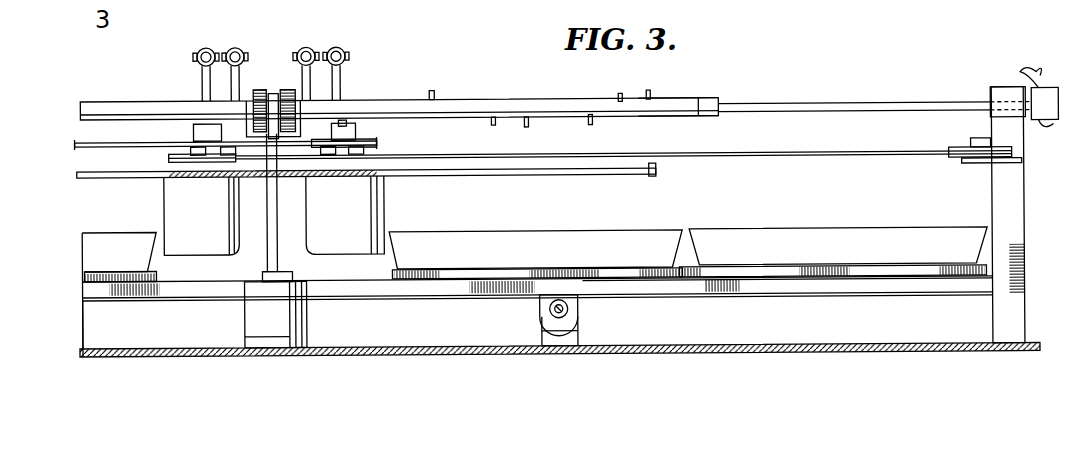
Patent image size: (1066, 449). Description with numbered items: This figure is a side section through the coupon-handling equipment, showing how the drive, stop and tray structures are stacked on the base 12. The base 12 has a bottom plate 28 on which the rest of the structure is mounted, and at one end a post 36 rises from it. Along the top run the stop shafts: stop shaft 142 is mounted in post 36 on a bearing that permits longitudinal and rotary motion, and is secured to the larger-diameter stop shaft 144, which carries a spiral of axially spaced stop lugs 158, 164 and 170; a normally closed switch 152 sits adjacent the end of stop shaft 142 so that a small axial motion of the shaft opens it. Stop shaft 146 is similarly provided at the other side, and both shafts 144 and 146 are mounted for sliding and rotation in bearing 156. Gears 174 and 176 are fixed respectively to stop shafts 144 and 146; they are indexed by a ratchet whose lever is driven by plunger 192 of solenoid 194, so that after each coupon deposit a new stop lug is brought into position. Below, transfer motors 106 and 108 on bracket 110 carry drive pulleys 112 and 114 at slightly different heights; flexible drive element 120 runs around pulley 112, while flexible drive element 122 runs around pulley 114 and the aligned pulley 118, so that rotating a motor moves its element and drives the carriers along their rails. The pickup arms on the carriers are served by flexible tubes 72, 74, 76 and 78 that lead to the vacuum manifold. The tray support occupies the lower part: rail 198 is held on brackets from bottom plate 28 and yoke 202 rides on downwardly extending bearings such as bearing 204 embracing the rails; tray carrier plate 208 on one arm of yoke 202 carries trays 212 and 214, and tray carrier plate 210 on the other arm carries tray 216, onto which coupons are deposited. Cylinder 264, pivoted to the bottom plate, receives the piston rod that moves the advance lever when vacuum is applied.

The cylinder 264 is at (181, 14).
The base 12 is at (92, 357).
The bottom plate 28 is at (470, 357).
The post 36 is at (1005, 201).
The flexible tube 72 is at (345, 50).
The flexible tube 74 is at (310, 50).
The flexible tube 76 is at (242, 50).
The flexible tube 78 is at (203, 50).
The transfer motor 106 is at (385, 205).
The transfer motor 108 is at (165, 201).
The bracket 110 is at (313, 180).
The drive pulley 112 is at (365, 130).
The drive pulley 114 is at (172, 159).
The pulley 118 is at (960, 150).
The flexible drive element 120 is at (105, 143).
The flexible drive element 122 is at (758, 162).
The stop shaft 142 is at (795, 107).
The stop shaft 144 is at (682, 101).
The stop shaft 146 is at (137, 105).
The normally closed switch 152 is at (1046, 94).
The bearing 156 is at (273, 104).
The stop lug 158 is at (438, 98).
The stop lug 164 is at (530, 128).
The stop lug 170 is at (648, 99).
The gear 174 is at (256, 92).
The gear 176 is at (292, 98).
The plunger 192 is at (270, 213).
The solenoid 194 is at (258, 313).
The rail 198 is at (575, 313).
The yoke 202 is at (405, 292).
The bearing 204 is at (540, 311).
The tray carrier plate 208 is at (683, 284).
The tray carrier plate 210 is at (113, 282).
The tray 212 is at (800, 236).
The tray 214 is at (583, 235).
The tray 216 is at (93, 255).